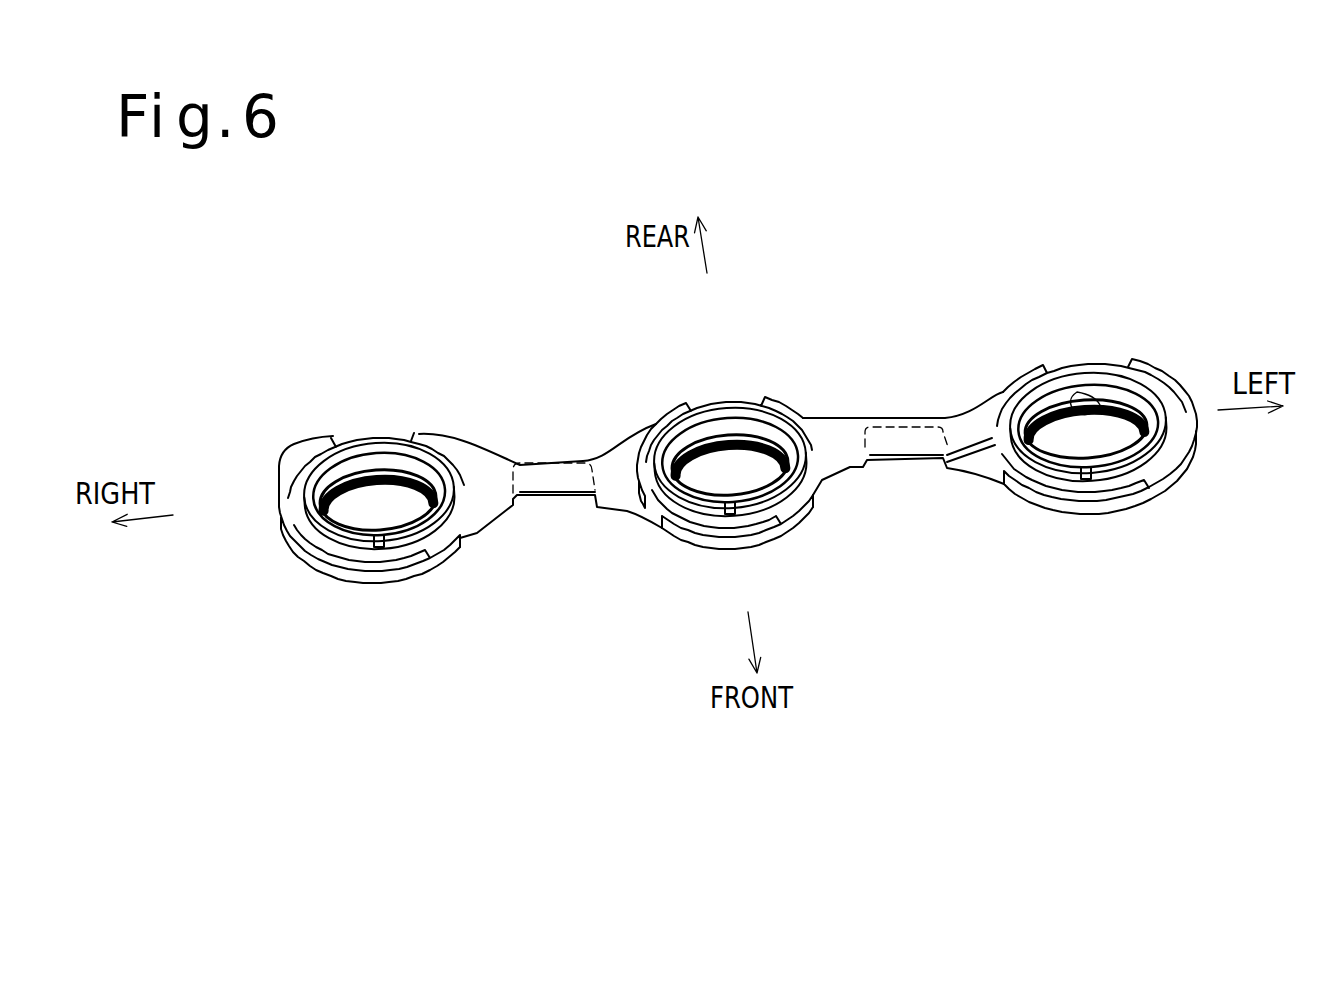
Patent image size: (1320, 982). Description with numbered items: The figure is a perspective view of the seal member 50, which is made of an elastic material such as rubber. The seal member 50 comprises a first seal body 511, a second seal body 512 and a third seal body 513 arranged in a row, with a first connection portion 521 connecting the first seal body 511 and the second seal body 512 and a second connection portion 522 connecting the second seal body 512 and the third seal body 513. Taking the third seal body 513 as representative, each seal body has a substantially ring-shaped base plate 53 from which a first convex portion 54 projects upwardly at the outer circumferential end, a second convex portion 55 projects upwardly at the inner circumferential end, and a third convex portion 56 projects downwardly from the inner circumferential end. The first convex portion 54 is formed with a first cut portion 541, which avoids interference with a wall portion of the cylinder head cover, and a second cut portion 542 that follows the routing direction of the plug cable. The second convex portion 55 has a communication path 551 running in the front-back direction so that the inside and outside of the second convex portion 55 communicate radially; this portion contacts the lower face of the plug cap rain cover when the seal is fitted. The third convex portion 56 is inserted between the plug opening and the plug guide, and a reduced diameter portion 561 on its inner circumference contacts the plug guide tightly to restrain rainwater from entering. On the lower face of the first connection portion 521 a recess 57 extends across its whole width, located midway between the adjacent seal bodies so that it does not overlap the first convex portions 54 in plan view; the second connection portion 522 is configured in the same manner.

The seal member 50 is at (1195, 272).
The first seal body 511 is at (477, 553).
The second seal body 512 is at (805, 562).
The third seal body 513 is at (1194, 504).
The first connection portion 521 is at (543, 458).
The second connection portion 522 is at (907, 417).
The base plate 53 is at (1000, 398).
The first convex portion 54 is at (1160, 492).
The first cut portion 541 is at (365, 438).
The second cut portion 542 is at (423, 555).
The second convex portion 55 is at (1130, 497).
The communication path 551 is at (331, 602).
The third convex portion 56 is at (1120, 392).
The reduced diameter portion 561 is at (1077, 392).
The recess 57 is at (553, 508).